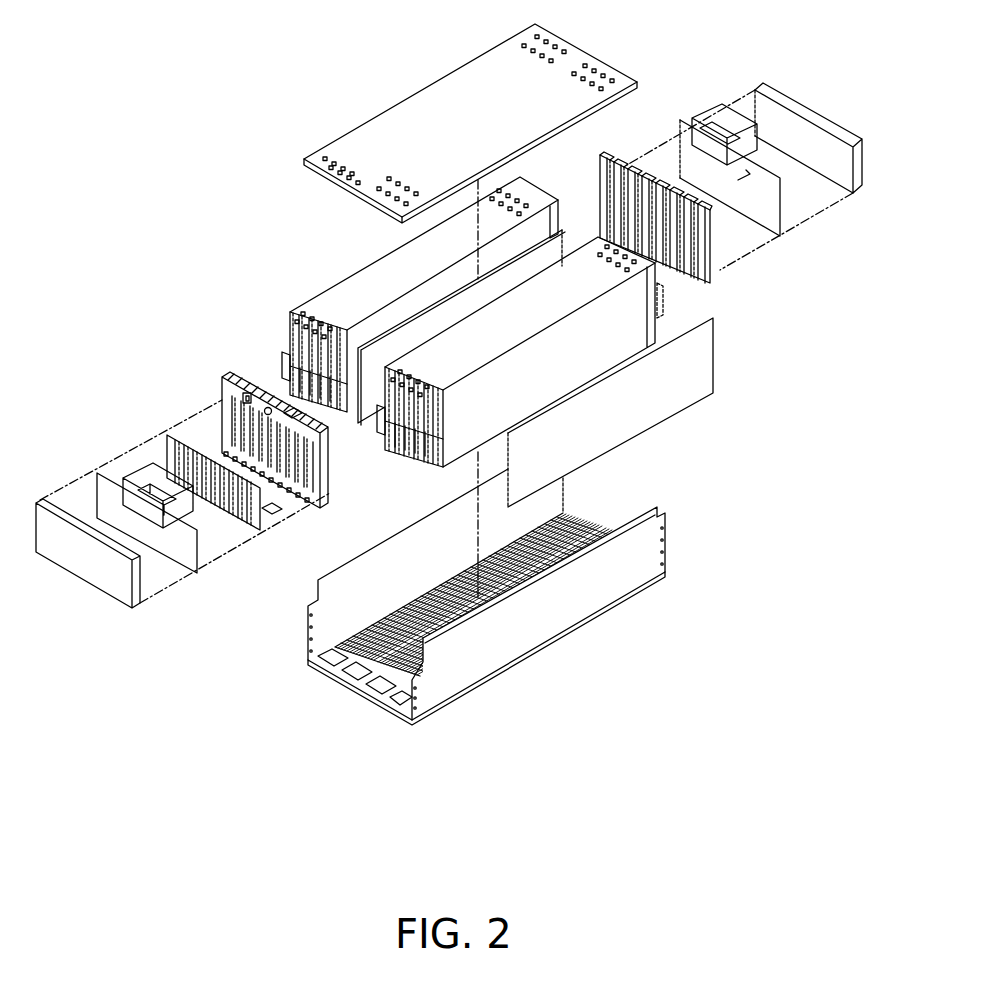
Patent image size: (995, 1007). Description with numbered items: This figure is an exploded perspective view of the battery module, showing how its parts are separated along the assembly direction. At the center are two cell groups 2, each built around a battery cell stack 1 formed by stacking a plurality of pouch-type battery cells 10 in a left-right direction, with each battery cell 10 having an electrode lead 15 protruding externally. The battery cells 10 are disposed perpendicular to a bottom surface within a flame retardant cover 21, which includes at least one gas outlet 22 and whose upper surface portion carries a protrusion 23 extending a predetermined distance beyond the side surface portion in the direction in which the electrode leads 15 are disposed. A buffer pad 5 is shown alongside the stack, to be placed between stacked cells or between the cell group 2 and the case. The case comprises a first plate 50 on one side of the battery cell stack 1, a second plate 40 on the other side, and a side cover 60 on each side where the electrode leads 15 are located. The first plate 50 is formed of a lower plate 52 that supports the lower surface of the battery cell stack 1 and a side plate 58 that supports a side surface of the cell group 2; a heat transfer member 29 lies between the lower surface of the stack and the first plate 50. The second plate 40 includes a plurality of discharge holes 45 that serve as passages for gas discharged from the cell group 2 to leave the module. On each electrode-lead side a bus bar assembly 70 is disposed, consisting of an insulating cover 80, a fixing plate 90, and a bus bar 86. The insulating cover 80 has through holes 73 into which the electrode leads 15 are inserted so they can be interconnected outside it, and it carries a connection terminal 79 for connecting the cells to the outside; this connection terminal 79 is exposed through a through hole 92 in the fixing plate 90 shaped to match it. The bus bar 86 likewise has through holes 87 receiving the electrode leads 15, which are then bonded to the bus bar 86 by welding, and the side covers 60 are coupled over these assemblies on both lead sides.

The battery cell stack 1 is at (417, 473).
The cell group 2 is at (469, 322).
The buffer pad 5 is at (655, 413).
The battery cell 10 is at (286, 336).
The electrode lead 15 is at (280, 366).
The flame retardant cover 21 is at (418, 258).
The gas outlet 22 is at (313, 305).
The protrusion 23 is at (288, 312).
The heat transfer member 29 is at (598, 528).
The second plate 40 is at (470, 117).
The discharge hole 45 is at (332, 150).
The first plate 50 is at (486, 644).
The lower plate 52 is at (392, 724).
The side plate 58 is at (452, 680).
The side cover 60 is at (100, 578).
The bus bar assembly 70 is at (446, 358).
The through holes 73 is at (310, 475).
The connection terminal 79 is at (300, 434).
The insulating cover 80 is at (457, 357).
The bus bar 86 is at (250, 528).
The through holes 87 is at (275, 516).
The fixing plate 90 is at (446, 358).
The through hole 92 is at (187, 532).